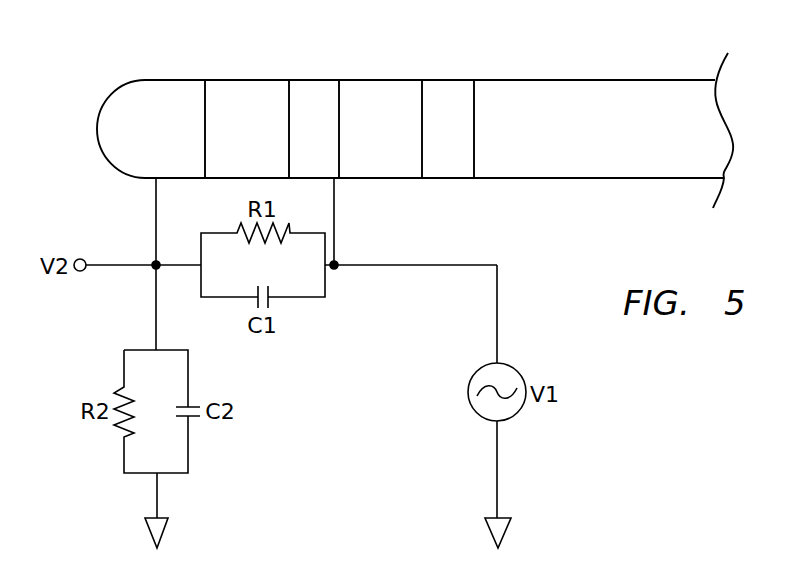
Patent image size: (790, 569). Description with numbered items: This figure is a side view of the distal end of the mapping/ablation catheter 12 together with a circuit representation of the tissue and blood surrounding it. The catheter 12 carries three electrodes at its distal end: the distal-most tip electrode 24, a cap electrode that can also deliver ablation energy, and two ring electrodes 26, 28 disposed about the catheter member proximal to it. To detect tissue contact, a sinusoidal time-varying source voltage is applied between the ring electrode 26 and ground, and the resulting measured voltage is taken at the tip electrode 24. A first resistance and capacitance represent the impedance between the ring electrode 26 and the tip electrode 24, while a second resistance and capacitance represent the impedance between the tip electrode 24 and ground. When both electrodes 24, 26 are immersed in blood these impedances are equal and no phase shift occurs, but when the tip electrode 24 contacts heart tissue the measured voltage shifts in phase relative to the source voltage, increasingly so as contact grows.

The mapping/ablation catheter 12 is at (590, 80).
The tip electrode 24 is at (171, 79).
The ring electrode 26 is at (311, 79).
The ring electrode 28 is at (452, 79).